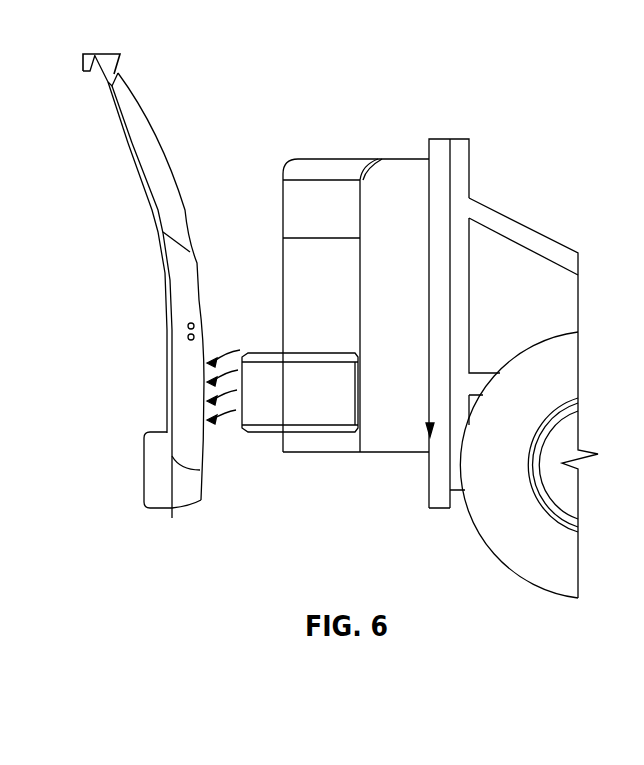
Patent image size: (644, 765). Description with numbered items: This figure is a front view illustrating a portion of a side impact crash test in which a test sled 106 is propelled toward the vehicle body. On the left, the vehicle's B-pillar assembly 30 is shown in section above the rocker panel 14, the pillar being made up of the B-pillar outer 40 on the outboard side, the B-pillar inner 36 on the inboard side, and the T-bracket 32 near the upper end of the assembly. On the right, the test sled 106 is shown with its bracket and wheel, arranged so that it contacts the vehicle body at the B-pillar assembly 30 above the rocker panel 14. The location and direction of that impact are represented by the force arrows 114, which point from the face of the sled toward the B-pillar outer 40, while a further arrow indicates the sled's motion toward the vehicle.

The rocker panel 14 is at (193, 490).
The B-pillar assembly 30 is at (115, 73).
The T-bracket 32 is at (110, 100).
The B-pillar inner 36 is at (168, 323).
The B-pillar outer 40 is at (158, 140).
The test sled 106 is at (523, 226).
The force arrows 114 is at (235, 420).